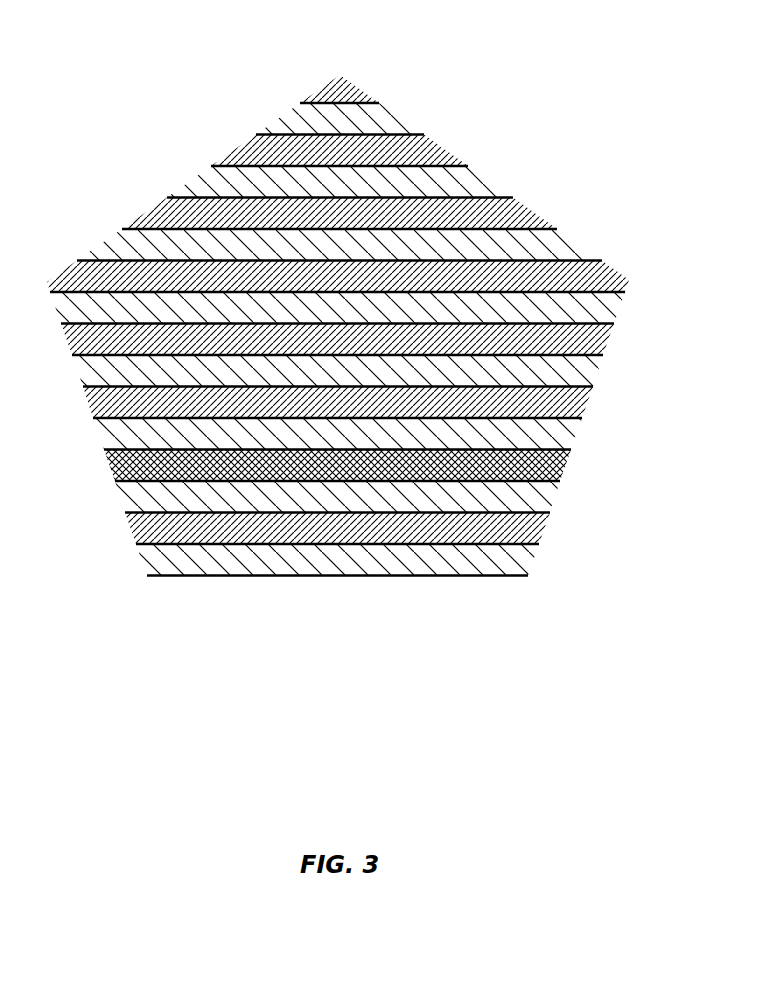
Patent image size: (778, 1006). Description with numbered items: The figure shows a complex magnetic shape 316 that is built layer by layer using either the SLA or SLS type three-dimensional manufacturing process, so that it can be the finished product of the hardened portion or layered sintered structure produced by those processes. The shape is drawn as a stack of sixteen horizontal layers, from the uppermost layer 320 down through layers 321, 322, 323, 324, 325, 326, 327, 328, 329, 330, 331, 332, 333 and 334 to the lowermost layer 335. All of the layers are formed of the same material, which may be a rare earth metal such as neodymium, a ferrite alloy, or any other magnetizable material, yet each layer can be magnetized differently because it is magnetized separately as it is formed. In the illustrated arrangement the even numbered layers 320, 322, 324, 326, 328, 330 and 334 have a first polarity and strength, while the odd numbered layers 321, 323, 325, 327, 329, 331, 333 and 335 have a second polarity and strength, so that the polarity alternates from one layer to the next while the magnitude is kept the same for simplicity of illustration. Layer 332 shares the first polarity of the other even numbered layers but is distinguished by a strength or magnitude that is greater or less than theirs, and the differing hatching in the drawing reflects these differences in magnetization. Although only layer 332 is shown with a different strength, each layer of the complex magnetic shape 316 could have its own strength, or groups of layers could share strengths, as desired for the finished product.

The complex magnetic shape 316 is at (112, 59).
The layer 320 is at (358, 92).
The layer 321 is at (395, 122).
The layer 322 is at (438, 153).
The layer 323 is at (481, 185).
The layer 324 is at (522, 205).
The layer 325 is at (572, 242).
The layer 326 is at (615, 270).
The layer 327 is at (613, 315).
The layer 328 is at (607, 343).
The layer 329 is at (595, 375).
The layer 330 is at (587, 403).
The layer 331 is at (575, 440).
The layer 332 is at (565, 470).
The layer 333 is at (553, 503).
The layer 334 is at (547, 532).
The layer 335 is at (527, 562).